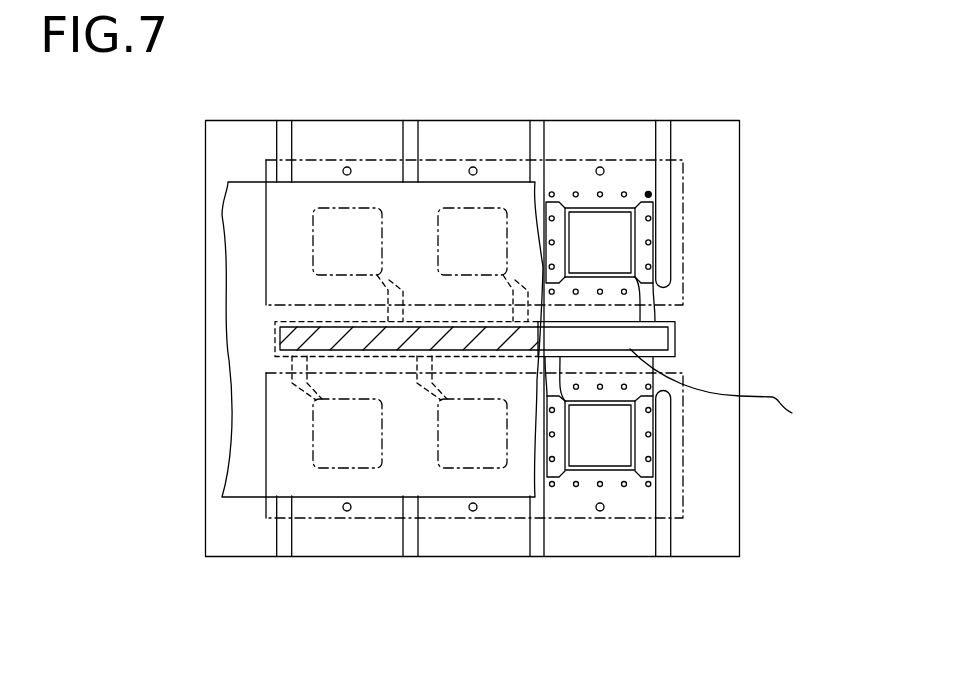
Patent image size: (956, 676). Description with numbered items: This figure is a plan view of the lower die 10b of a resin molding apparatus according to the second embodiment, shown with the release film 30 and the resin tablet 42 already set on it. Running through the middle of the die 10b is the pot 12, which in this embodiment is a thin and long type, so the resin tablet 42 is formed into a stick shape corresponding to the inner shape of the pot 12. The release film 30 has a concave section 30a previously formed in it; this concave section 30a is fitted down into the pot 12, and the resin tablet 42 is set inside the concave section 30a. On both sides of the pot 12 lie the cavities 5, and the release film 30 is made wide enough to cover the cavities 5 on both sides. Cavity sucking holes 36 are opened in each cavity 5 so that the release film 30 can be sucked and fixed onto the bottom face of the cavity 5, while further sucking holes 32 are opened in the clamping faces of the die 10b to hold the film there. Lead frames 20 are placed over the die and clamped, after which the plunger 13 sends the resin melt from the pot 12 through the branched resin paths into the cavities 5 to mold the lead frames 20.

The lower die 10b is at (235, 132).
The cavity 5 is at (622, 247).
The pot 12 is at (668, 340).
The plunger 13 is at (727, 391).
The lead frame 20 is at (567, 168).
The release film 30 is at (238, 218).
The concave section 30a is at (307, 326).
The sucking hole 32 is at (648, 194).
The cavity sucking hole 36 is at (612, 208).
The resin tablet 42 is at (292, 340).